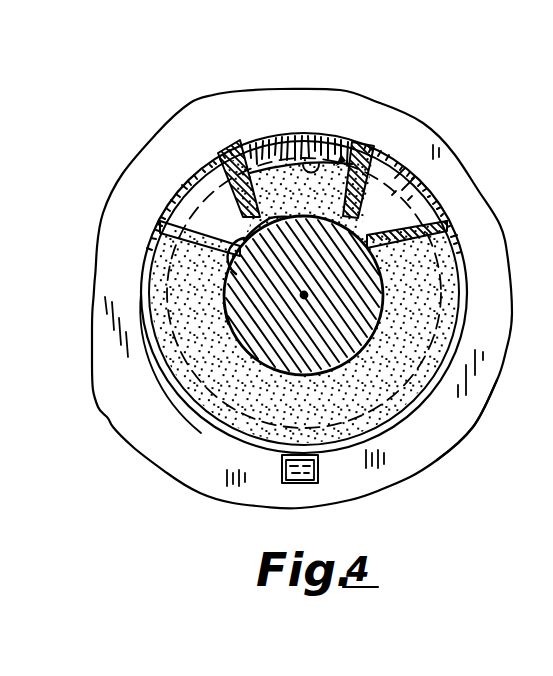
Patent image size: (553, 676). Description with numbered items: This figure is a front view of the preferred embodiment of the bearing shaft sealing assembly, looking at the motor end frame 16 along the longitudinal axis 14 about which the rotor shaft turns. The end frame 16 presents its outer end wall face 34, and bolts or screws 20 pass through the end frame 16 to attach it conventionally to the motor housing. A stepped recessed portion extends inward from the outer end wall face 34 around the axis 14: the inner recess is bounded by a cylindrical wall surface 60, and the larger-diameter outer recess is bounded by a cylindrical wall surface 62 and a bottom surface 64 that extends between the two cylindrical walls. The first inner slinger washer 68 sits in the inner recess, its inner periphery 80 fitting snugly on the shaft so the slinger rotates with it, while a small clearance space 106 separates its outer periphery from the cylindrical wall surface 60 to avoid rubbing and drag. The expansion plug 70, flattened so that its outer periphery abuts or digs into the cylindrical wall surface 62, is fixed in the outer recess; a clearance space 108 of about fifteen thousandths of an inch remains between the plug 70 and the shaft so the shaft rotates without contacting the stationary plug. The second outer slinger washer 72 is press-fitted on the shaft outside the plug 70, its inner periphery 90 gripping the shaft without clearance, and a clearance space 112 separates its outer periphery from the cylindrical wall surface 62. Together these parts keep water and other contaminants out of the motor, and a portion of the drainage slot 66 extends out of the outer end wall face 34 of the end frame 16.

The longitudinal axis 14 is at (304, 295).
The end frame 16 is at (214, 110).
The bolts or screws 20 is at (383, 280).
The outer end wall face 34 is at (447, 432).
The cylindrical wall surface 60 is at (314, 164).
The cylindrical wall surface 62 is at (420, 191).
The bottom surface 64 is at (259, 150).
The drainage slot 66 is at (300, 470).
The first inner slinger washer 68 is at (287, 180).
The expansion plug 70 is at (392, 168).
The second outer slinger washer 72 is at (462, 242).
The inner periphery 80 is at (215, 232).
The inner periphery 90 is at (234, 312).
The clearance space 106 is at (477, 90).
The clearance space 108 is at (230, 278).
The clearance space 112 is at (168, 387).